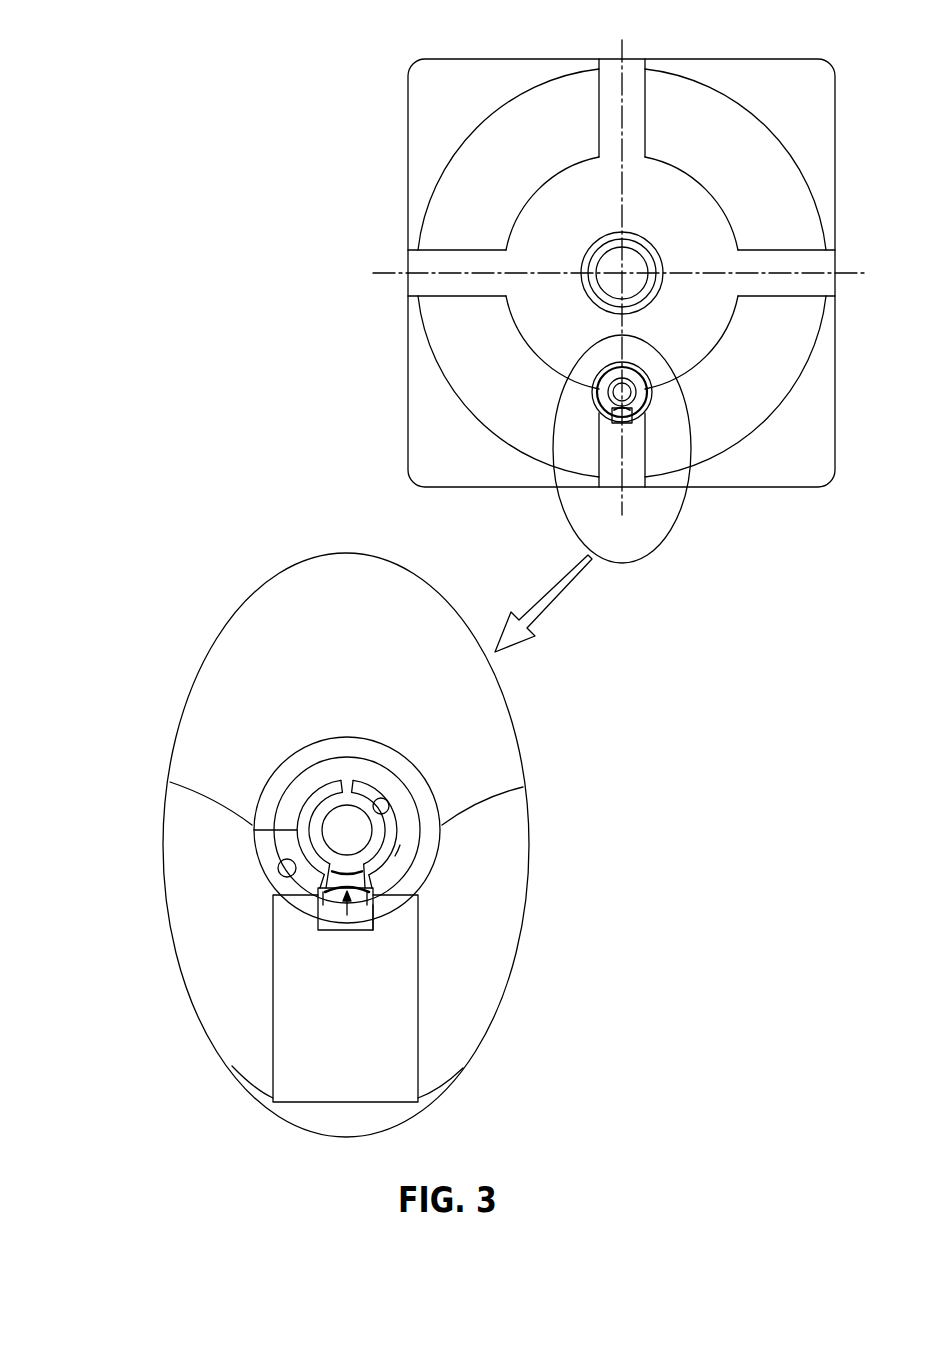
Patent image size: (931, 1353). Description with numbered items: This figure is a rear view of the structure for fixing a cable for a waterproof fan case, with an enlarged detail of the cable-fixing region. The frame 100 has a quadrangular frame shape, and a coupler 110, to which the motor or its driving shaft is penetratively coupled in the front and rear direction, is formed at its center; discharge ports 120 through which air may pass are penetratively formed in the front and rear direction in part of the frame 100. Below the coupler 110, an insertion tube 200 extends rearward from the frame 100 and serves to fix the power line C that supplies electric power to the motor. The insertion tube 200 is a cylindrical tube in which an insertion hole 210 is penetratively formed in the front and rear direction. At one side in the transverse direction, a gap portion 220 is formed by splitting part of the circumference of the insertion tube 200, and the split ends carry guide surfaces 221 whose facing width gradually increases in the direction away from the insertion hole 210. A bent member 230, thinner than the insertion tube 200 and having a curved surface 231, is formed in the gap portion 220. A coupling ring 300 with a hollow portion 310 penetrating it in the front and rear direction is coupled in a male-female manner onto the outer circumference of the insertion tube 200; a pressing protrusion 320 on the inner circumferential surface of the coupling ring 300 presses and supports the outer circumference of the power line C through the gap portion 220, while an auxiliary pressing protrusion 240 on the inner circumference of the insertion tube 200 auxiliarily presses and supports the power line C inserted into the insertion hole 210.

The frame 100 is at (425, 123).
The coupler 110 is at (593, 260).
The discharge ports 120 is at (550, 120).
The insertion tube 200 is at (593, 393).
The insertion hole 210 is at (390, 817).
The gap portion 220 is at (318, 903).
The guide surfaces 221 is at (318, 927).
The bent member 230 is at (375, 915).
The curved surface 231 is at (393, 838).
The auxiliary pressing protrusion 240 is at (337, 785).
The coupling ring 300 is at (597, 392).
The hollow portion 310 is at (280, 886).
The pressing protrusion 320 is at (345, 900).
The power line C is at (300, 830).